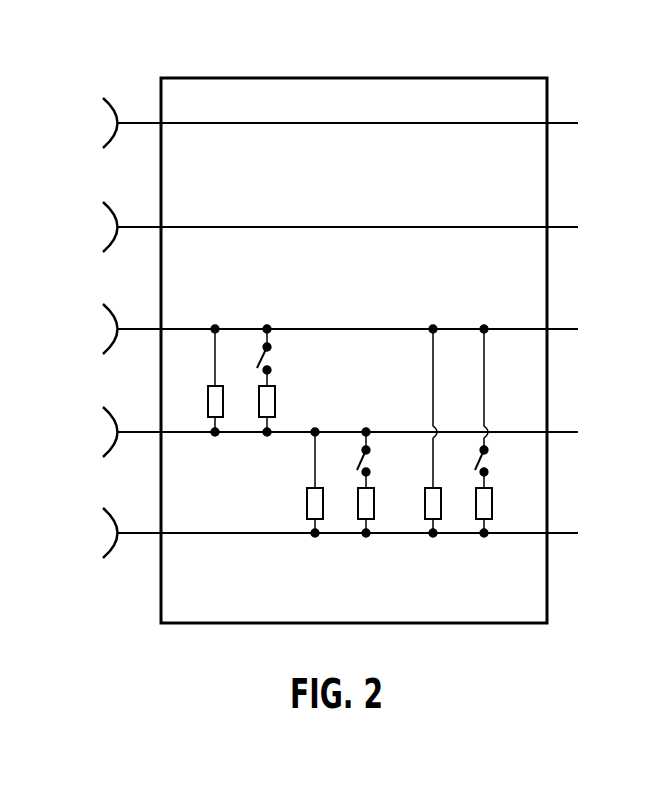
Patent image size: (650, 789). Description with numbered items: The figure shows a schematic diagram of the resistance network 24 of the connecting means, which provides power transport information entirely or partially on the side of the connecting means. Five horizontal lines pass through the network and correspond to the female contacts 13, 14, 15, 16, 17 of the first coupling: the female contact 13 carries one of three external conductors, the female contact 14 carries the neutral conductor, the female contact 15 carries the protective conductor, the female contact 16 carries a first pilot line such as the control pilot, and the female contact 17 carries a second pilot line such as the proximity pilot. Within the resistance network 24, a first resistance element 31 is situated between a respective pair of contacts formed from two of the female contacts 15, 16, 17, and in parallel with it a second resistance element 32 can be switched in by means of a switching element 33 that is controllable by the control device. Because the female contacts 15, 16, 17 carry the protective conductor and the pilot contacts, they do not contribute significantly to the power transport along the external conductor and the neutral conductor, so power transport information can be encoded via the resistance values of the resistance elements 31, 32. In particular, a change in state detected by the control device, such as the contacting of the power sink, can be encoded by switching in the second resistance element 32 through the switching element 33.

The female contact 13 is at (114, 100).
The female contact 14 is at (118, 206).
The female contact 15 is at (118, 308).
The female contact 16 is at (118, 411).
The female contact 17 is at (118, 512).
The resistance network 24 is at (403, 55).
The first resistance element 31 is at (207, 403).
The second resistance element 32 is at (276, 401).
The switching element 33 is at (273, 347).